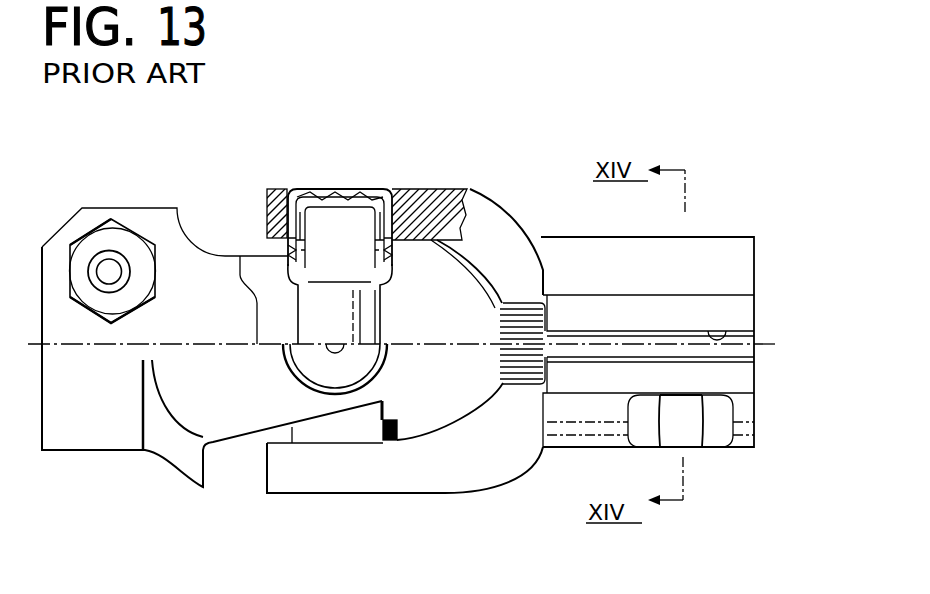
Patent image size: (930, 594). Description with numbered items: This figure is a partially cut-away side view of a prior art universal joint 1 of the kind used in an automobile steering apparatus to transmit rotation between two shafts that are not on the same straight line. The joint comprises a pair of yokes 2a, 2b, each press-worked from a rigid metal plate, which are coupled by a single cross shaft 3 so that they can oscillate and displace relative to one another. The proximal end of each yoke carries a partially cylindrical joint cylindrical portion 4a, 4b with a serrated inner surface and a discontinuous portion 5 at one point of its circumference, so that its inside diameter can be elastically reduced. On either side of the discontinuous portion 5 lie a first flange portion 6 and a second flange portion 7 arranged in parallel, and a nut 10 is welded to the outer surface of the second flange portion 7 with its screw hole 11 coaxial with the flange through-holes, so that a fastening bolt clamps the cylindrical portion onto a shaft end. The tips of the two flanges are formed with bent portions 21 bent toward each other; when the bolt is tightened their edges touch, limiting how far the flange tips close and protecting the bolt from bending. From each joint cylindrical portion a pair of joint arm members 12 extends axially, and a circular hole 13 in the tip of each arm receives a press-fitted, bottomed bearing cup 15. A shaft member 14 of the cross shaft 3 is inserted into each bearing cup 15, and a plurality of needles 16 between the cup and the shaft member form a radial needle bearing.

The universal joint 1 is at (373, 168).
The yoke 2a is at (500, 188).
The yoke 2b is at (221, 207).
The cross shaft 3 is at (320, 220).
The joint cylindrical portion 4a is at (582, 257).
The joint cylindrical portion 4b is at (87, 430).
The discontinuous portion 5 is at (727, 333).
The first flange portion 6 is at (642, 312).
The second flange portion 7 is at (128, 218).
The nut 10 is at (133, 255).
The screw hole 11 is at (102, 263).
The joint arm member 12 is at (470, 187).
The circular hole 13 is at (437, 223).
The shaft member 14 is at (352, 218).
The bearing cup 15 is at (297, 217).
The needle 16 is at (292, 220).
The bent portion 21 is at (692, 312).